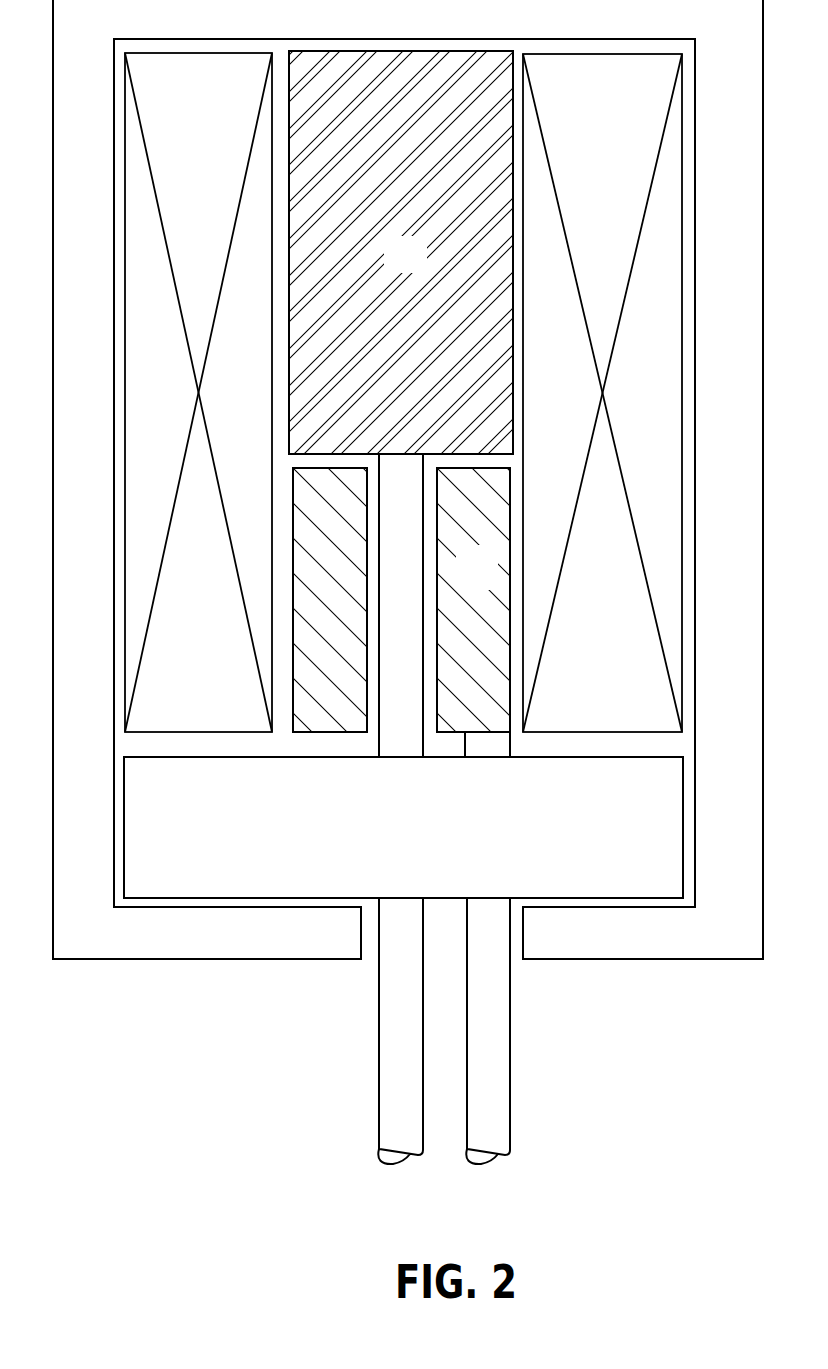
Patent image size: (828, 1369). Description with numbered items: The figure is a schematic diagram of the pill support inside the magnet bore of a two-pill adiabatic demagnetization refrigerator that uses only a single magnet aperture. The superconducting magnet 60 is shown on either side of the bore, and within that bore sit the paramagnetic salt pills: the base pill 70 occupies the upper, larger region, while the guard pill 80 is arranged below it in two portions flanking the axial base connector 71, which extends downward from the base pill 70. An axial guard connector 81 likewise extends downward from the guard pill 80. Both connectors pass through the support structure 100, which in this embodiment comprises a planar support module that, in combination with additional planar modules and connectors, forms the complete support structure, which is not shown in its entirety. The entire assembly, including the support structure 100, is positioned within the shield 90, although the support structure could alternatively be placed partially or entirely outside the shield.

The superconducting magnet 60 is at (590, 198).
The base pill 70 is at (418, 267).
The axial base connector 71 is at (402, 1047).
The guard pill 80 is at (465, 580).
The axial guard connector 81 is at (497, 1058).
The shield 90 is at (737, 483).
The support structure 100 is at (394, 829).